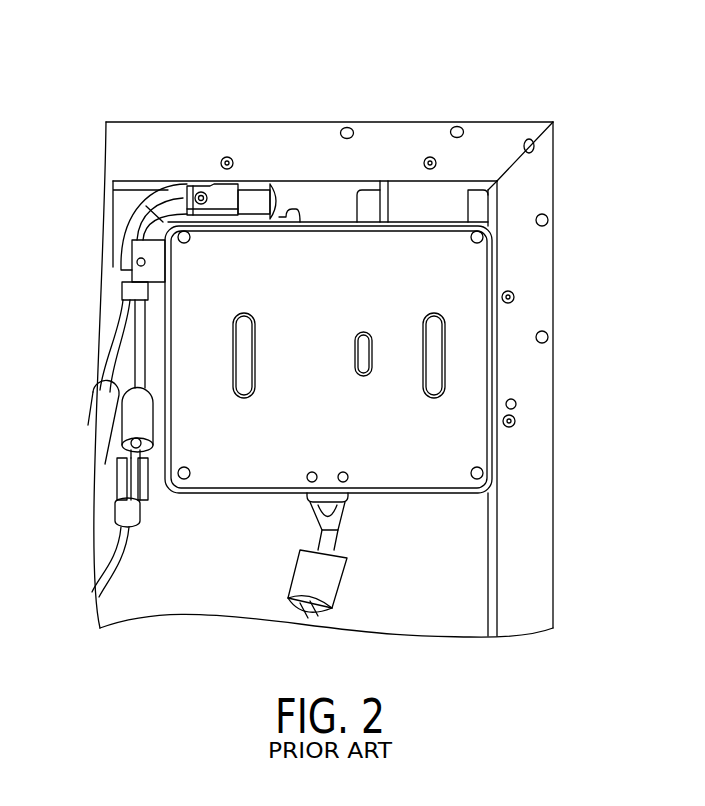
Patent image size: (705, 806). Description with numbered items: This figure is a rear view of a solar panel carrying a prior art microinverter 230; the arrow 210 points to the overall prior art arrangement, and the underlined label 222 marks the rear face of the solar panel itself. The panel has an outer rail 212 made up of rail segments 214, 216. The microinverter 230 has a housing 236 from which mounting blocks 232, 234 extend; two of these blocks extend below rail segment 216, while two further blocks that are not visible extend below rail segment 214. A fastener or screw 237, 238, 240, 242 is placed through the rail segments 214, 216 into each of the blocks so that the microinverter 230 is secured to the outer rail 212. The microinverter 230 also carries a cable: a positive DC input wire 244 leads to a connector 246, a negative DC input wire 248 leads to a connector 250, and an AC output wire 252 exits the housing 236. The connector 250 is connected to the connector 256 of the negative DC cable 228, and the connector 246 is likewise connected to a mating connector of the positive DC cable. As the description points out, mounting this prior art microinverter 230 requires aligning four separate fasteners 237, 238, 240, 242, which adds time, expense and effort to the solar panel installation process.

The prior art housing assembly 210 is at (600, 82).
The outer rail 212 is at (557, 468).
The rail segment 214 is at (548, 219).
The rail segment 216 is at (302, 121).
The housing surface 222 is at (430, 584).
The negative DC cable 228 is at (104, 565).
The microinverter 230 is at (474, 367).
The mounting block 232 is at (203, 183).
The mounting block 234 is at (417, 200).
The housing 236 is at (382, 258).
The fastener or screw 237 is at (228, 157).
The fastener or screw 238 is at (431, 157).
The fastener or screw 240 is at (514, 296).
The fastener or screw 242 is at (515, 420).
The positive DC input wire 244 is at (115, 368).
The connector 246 is at (98, 430).
The negative DC input wire 248 is at (140, 340).
The connector 250 is at (130, 415).
The AC output wire 252 is at (292, 606).
The connector 256 is at (120, 485).